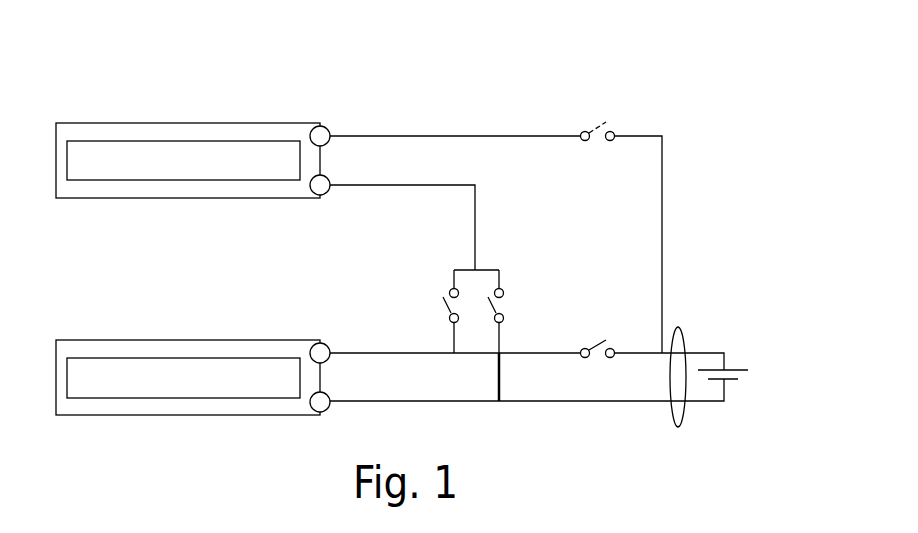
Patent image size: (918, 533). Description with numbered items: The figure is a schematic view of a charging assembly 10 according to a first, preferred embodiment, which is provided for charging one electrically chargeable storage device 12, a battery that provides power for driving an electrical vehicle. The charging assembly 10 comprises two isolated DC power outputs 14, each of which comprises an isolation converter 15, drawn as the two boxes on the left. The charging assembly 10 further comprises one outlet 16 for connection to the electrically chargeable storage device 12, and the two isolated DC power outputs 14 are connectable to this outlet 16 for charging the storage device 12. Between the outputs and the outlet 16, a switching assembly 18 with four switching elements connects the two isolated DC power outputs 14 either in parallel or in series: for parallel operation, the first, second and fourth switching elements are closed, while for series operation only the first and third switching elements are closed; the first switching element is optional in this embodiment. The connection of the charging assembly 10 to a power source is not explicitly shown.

The charging assembly 10 is at (393, 84).
The electrically chargeable storage device 12 is at (747, 383).
The isolated DC power output 14 is at (193, 117).
The isolation converter 15 is at (105, 142).
The outlet 16 is at (678, 430).
The switching assembly 18 is at (545, 111).